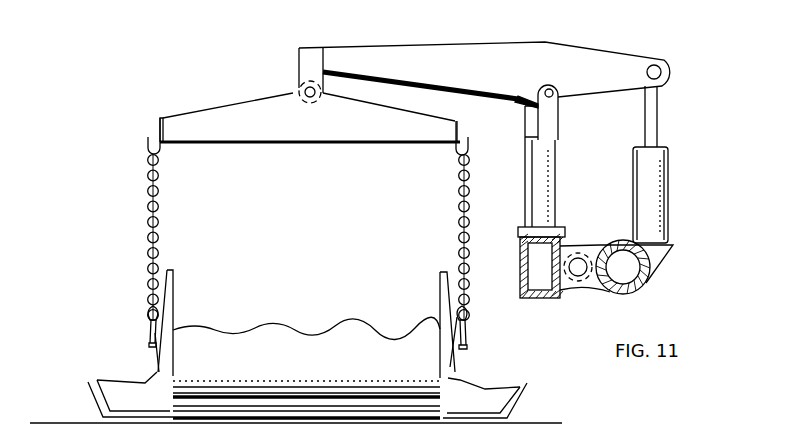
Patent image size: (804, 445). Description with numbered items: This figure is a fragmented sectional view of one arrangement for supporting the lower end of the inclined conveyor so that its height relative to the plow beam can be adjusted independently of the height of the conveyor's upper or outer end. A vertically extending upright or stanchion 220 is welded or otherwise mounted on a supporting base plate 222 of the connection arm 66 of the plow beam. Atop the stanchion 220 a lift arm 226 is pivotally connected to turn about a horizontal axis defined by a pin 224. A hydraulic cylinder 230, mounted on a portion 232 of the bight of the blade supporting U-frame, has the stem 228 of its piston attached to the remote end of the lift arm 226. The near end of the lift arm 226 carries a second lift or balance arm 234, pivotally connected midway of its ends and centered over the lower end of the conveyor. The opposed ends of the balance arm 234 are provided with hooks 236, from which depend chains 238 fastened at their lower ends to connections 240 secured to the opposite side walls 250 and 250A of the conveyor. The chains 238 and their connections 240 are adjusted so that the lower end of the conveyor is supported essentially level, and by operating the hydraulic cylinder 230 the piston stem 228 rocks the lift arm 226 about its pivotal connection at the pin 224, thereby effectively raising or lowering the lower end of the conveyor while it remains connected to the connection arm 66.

The connection arm 66 is at (520, 284).
The stanchion 220 is at (556, 167).
The supporting base plate 222 is at (565, 228).
The pin 224 is at (560, 95).
The lift arm 226 is at (444, 47).
The piston stem 228 is at (658, 112).
The hydraulic cylinder 230 is at (671, 192).
The portion of bight portion 232 is at (668, 258).
The balance arm 234 is at (205, 113).
The hooks 236 is at (145, 144).
The chains 238 is at (148, 206).
The connections 240 is at (149, 328).
The side wall 250 is at (160, 353).
The side wall 250A is at (453, 368).